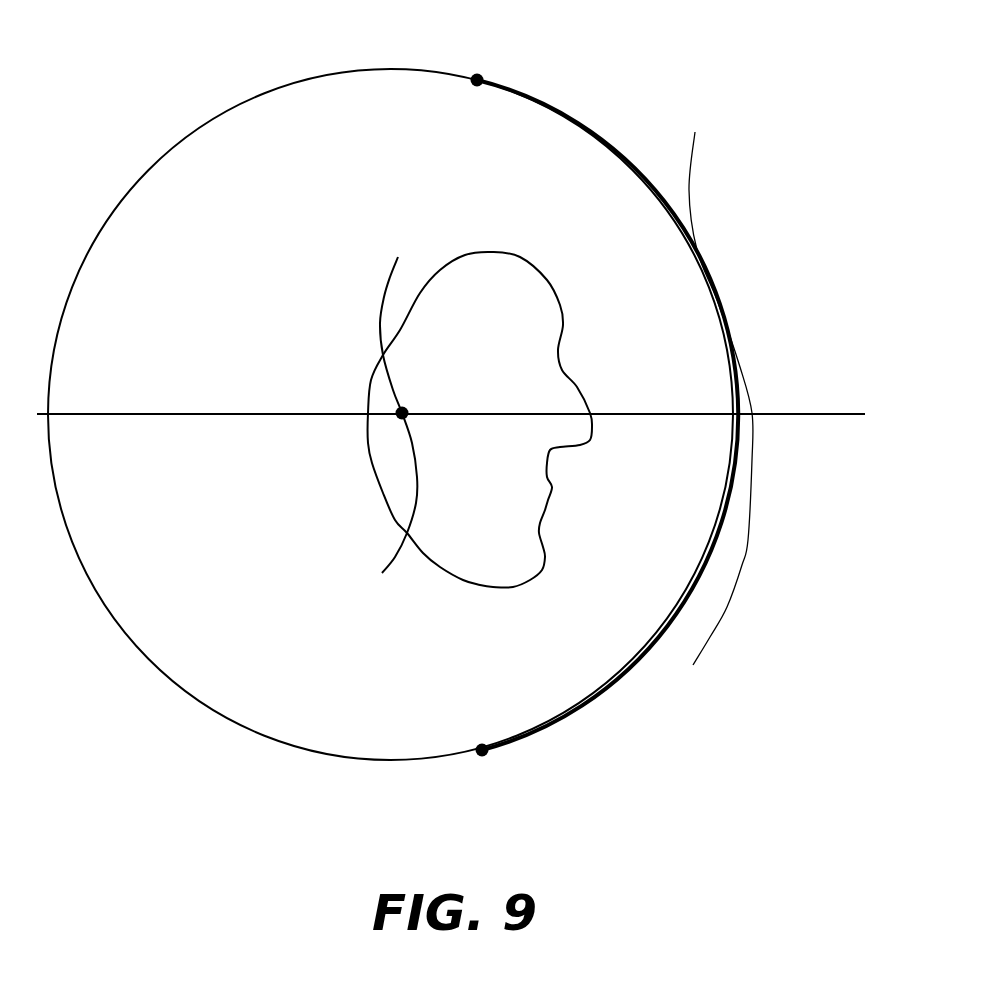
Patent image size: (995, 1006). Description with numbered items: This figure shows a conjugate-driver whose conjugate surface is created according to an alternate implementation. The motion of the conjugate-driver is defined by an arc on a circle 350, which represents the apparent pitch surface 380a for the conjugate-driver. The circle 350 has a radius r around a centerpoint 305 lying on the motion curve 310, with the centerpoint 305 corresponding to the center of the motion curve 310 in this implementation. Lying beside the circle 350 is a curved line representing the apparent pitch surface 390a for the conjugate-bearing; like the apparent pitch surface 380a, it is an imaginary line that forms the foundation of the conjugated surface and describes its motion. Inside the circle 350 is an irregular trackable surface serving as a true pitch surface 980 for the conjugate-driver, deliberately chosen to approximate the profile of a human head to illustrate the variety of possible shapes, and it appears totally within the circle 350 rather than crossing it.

The circle 350 is at (358, 70).
The apparent pitch surface 380a is at (572, 713).
The apparent pitch surface for the conjugate-bearing 390a is at (742, 565).
The true pitch surface 980 is at (508, 253).
The motion curve 310 is at (385, 283).
The centerpoint 305 is at (402, 413).